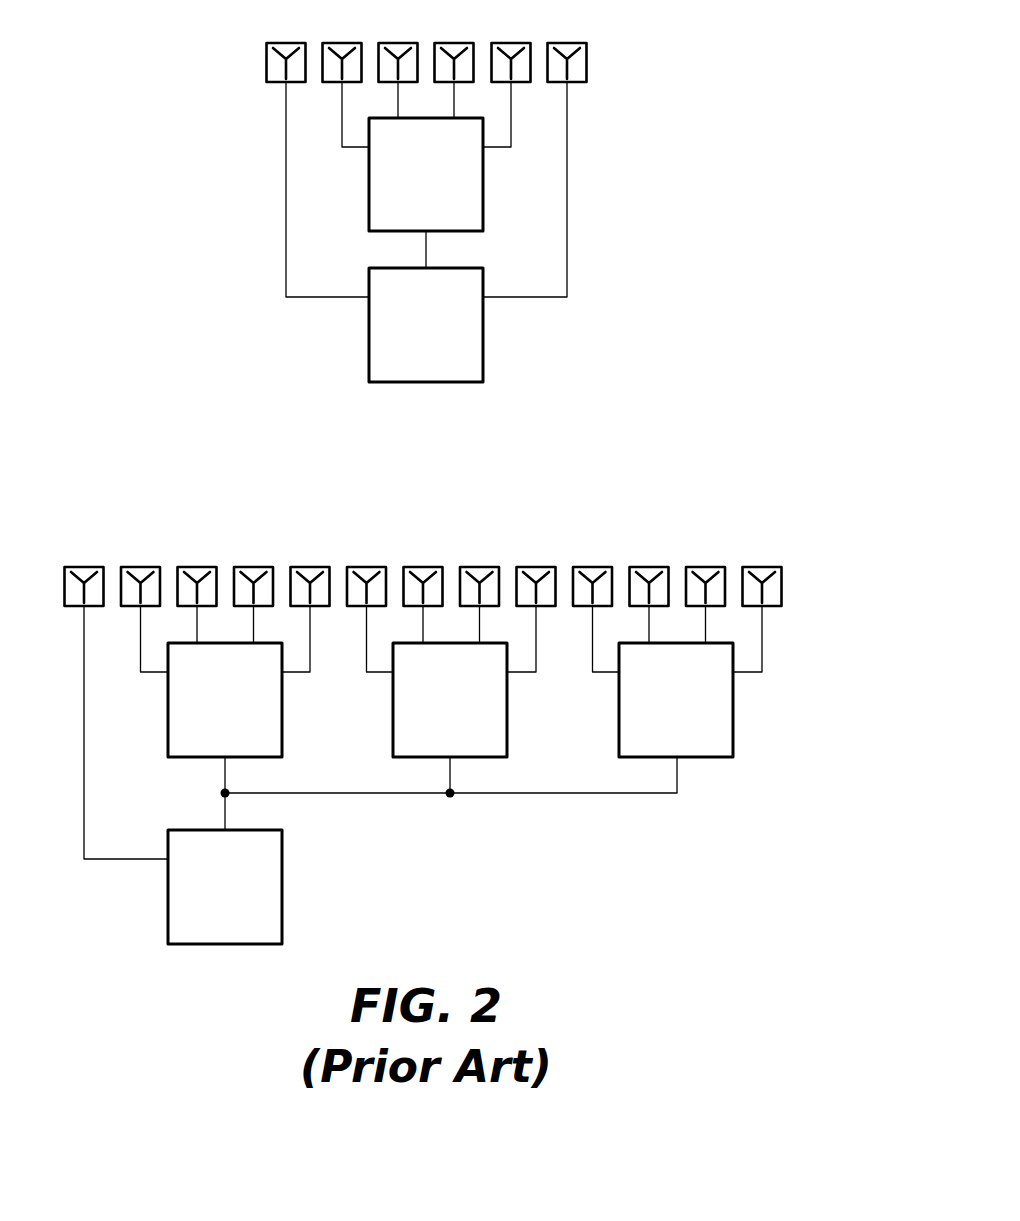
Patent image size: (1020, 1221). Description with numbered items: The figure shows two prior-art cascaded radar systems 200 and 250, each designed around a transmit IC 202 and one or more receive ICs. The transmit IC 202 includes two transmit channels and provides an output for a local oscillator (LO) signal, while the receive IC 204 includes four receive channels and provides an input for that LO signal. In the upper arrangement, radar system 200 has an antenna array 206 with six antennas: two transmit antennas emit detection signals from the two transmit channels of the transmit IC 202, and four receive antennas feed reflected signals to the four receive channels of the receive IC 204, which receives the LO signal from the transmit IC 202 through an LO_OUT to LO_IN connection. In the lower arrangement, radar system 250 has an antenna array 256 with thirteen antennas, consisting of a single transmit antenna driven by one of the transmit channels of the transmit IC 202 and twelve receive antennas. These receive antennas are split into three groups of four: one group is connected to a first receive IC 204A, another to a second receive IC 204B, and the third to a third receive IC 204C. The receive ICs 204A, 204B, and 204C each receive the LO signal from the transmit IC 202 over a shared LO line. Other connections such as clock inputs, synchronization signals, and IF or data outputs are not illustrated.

The cascaded radar system 200 is at (424, 480).
The transmit IC 202 is at (484, 340).
The receive IC 204 is at (484, 189).
The first receive IC 204A is at (283, 713).
The second receive IC 204B is at (508, 713).
The third receive IC 204C is at (734, 713).
The antenna array 206 is at (612, 65).
The cascaded radar system 250 is at (473, 740).
The antenna array 256 is at (828, 590).